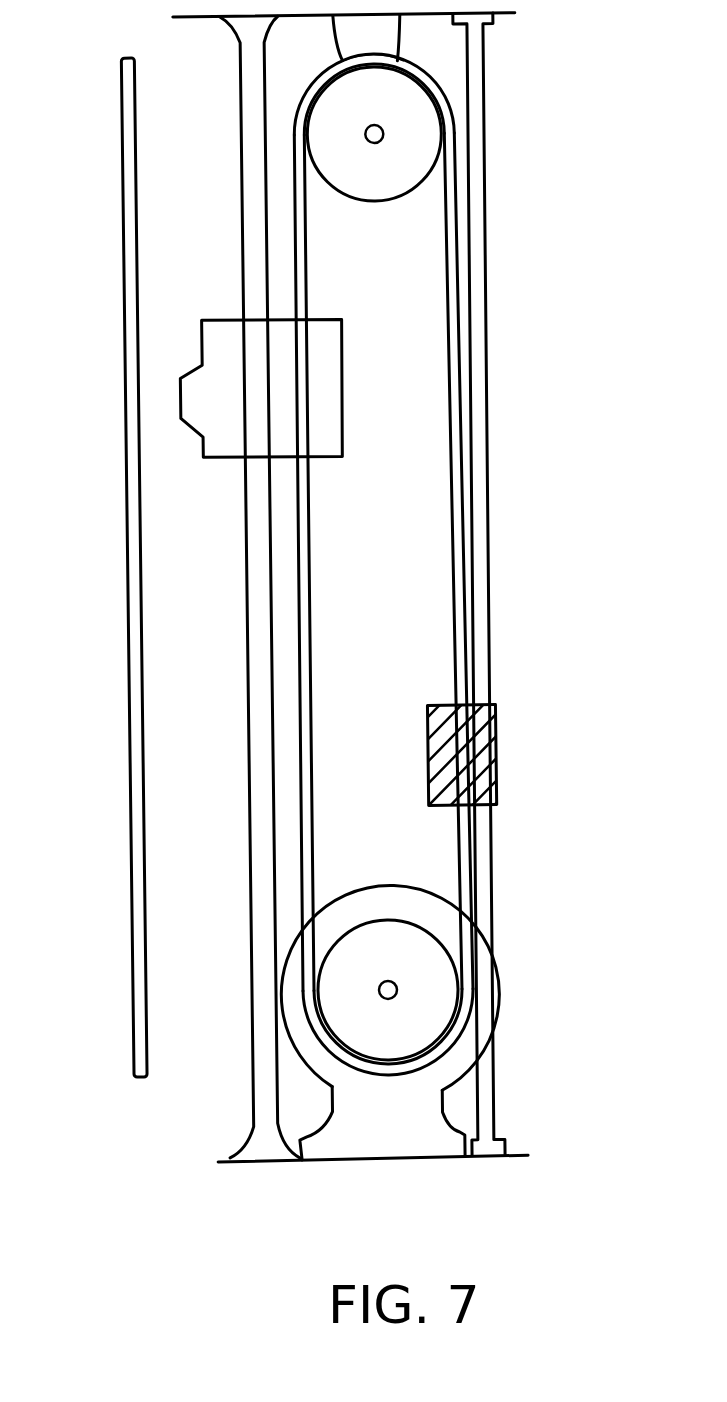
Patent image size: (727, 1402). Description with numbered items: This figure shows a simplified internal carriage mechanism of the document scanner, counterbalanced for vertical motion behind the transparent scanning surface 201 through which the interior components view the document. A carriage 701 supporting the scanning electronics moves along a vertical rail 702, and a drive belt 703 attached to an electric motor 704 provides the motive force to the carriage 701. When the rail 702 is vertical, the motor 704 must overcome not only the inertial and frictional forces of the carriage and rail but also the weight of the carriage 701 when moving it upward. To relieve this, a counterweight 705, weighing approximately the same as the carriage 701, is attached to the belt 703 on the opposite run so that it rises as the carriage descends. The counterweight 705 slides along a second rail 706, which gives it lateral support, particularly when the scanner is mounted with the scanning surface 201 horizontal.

The transparent scanning surface 201 is at (128, 167).
The carriage 701 is at (294, 403).
The rail 702 is at (246, 115).
The drive belt 703 is at (462, 223).
The electric motor 704 is at (364, 882).
The counterweight 705 is at (495, 742).
The rail 706 is at (490, 396).